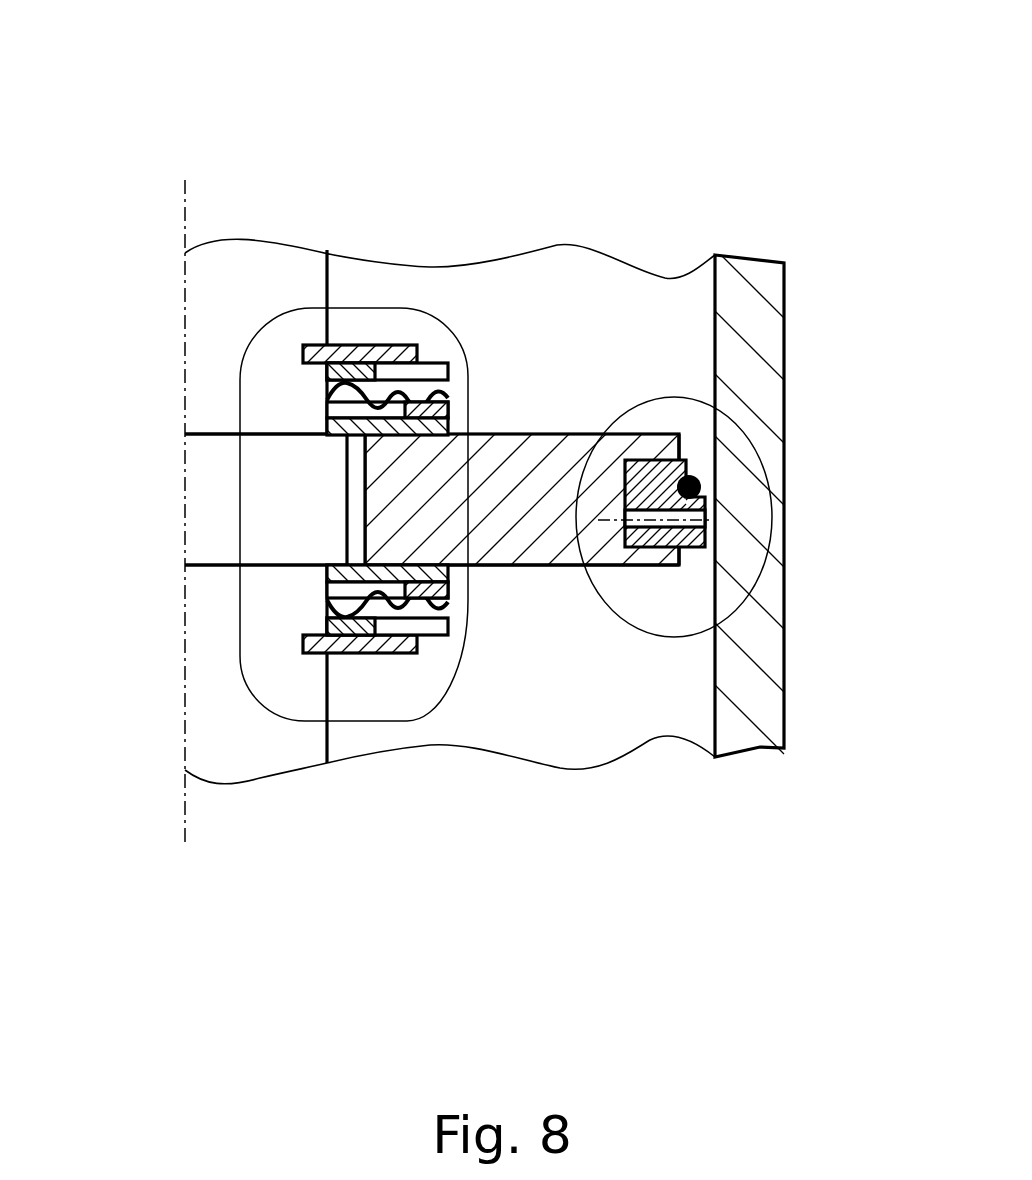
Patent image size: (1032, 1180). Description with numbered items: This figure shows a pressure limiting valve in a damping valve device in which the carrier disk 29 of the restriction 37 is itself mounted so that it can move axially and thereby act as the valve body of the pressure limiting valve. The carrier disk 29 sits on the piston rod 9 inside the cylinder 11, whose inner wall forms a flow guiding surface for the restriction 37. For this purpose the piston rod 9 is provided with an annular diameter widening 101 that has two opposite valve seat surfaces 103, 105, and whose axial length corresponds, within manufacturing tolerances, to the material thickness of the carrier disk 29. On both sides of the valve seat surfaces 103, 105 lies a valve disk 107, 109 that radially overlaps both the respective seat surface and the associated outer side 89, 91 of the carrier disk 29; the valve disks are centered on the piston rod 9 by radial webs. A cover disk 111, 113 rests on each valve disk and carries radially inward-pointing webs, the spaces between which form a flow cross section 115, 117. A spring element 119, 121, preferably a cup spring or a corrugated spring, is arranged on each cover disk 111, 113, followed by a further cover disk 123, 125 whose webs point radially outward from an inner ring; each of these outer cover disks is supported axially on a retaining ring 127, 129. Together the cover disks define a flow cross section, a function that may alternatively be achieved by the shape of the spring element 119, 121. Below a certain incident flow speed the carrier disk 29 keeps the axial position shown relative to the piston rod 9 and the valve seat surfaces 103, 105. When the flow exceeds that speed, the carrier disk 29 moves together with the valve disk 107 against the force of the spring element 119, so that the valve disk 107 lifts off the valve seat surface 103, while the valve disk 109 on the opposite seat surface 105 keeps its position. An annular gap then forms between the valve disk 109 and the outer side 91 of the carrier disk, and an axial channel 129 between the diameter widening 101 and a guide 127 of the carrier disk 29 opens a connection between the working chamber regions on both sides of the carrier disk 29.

The piston rod 9 is at (212, 308).
The cylinder 11 is at (753, 724).
The carrier disk 29 is at (588, 566).
The restriction 37 is at (675, 397).
The outer side of the carrier disk 89 is at (541, 434).
The outer side of the carrier disk 91 is at (575, 565).
The annular diameter widening 101 is at (215, 540).
The valve seat surface 103 is at (338, 438).
The valve seat surface 105 is at (339, 562).
The valve disk 107 is at (337, 427).
The valve disk 109 is at (337, 575).
The cover disk 111 is at (450, 407).
The cover disk 113 is at (447, 592).
The flow cross section 115 is at (337, 405).
The flow cross section 117 is at (337, 590).
The spring element 119 is at (445, 388).
The spring element 121 is at (469, 600).
The cover disk 123 is at (337, 370).
The cover disk 125 is at (337, 625).
The retaining ring 127 is at (367, 491).
The retaining ring 129 is at (357, 482).